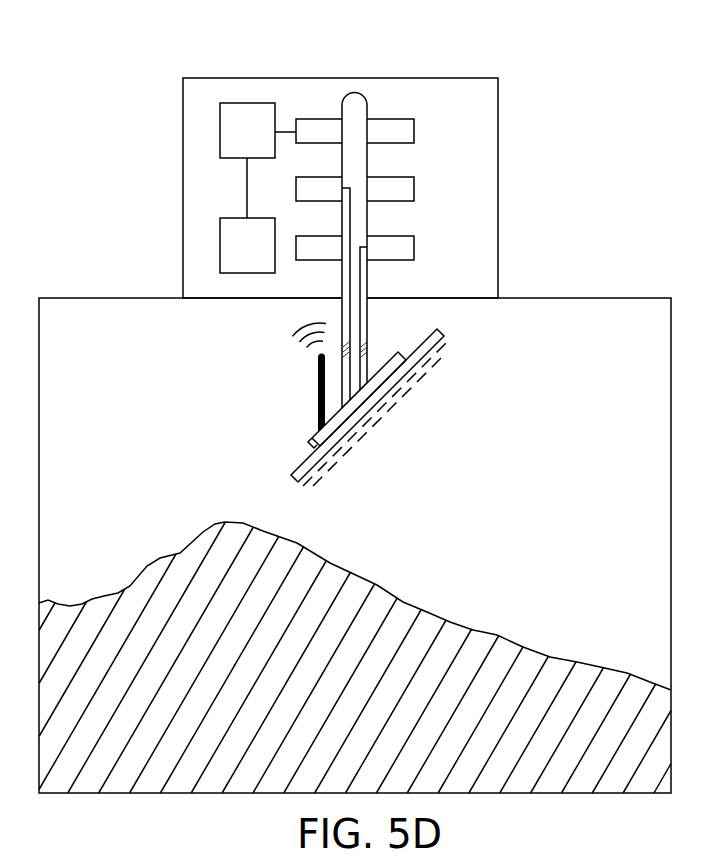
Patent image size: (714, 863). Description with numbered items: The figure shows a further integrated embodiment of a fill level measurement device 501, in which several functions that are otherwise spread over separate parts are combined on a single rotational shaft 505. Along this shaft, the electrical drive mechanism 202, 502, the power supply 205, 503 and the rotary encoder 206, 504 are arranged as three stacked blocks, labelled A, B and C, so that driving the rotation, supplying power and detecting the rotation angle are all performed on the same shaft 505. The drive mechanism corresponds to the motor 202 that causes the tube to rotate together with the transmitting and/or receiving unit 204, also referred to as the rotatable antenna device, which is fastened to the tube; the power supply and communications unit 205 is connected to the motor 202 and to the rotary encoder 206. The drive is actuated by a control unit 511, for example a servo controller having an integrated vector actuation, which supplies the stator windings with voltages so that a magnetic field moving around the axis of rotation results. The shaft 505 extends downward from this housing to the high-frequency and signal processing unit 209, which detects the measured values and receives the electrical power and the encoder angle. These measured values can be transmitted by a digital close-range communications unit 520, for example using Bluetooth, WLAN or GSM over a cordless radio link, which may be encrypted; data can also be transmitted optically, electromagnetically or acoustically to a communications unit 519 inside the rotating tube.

The measurement device 501 is at (474, 77).
The electrical drive mechanism 502 is at (477, 131).
The motor 202 is at (395, 143).
The power supply 503 is at (477, 201).
The power supply and communications unit 205 is at (395, 201).
The rotary encoder 504 is at (472, 260).
The rotary encoder 206 is at (395, 260).
The rotational shaft 505 is at (362, 108).
The control unit 511 is at (252, 103).
The communications unit 519 is at (220, 264).
The digital close-range communications unit 520 is at (317, 383).
The high-frequency and signal processing unit 209 is at (313, 440).
The transmitting and/or receiving unit 204 is at (438, 333).